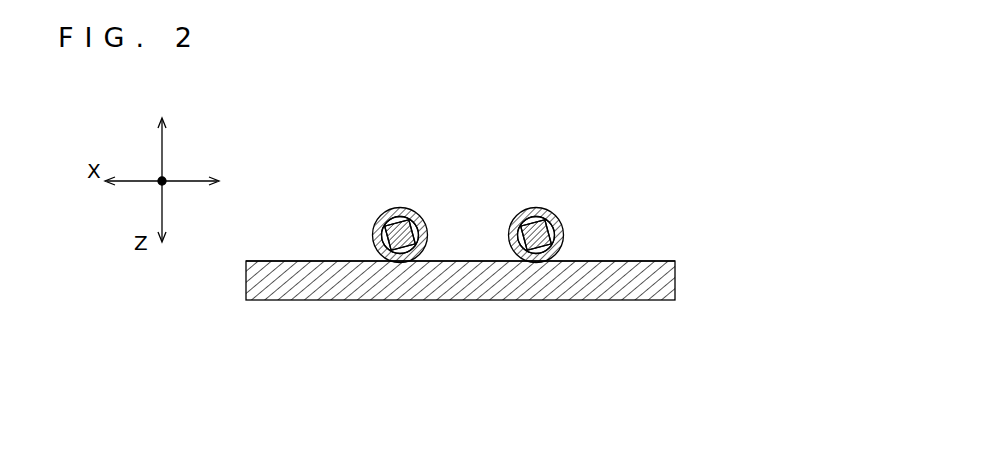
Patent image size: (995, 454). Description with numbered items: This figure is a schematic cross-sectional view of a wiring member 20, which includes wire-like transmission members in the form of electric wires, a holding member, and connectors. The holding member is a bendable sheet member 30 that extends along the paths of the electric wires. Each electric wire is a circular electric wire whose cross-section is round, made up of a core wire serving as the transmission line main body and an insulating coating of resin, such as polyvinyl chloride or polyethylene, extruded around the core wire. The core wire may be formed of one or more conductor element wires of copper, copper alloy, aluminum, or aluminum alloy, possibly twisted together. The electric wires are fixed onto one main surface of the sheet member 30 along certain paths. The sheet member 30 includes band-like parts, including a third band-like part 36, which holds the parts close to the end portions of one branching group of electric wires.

The wiring member 20 is at (455, 324).
The sheet member 30 is at (613, 300).
The third band-like part 36 is at (676, 272).